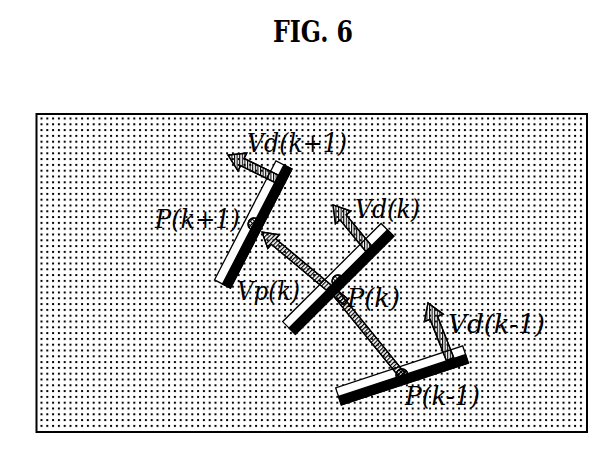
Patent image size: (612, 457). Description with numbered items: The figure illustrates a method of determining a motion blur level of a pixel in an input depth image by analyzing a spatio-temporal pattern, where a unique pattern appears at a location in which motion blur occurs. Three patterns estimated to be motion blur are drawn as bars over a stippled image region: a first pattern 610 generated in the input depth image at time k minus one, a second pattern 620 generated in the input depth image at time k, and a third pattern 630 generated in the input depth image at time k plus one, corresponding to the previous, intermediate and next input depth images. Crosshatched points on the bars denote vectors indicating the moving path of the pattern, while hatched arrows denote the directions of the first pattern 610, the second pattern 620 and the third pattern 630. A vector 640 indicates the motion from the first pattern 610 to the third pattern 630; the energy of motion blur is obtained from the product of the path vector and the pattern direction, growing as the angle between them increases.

The first pattern 610 is at (338, 401).
The second pattern 620 is at (298, 331).
The third pattern 630 is at (216, 286).
The vector 640 is at (370, 344).